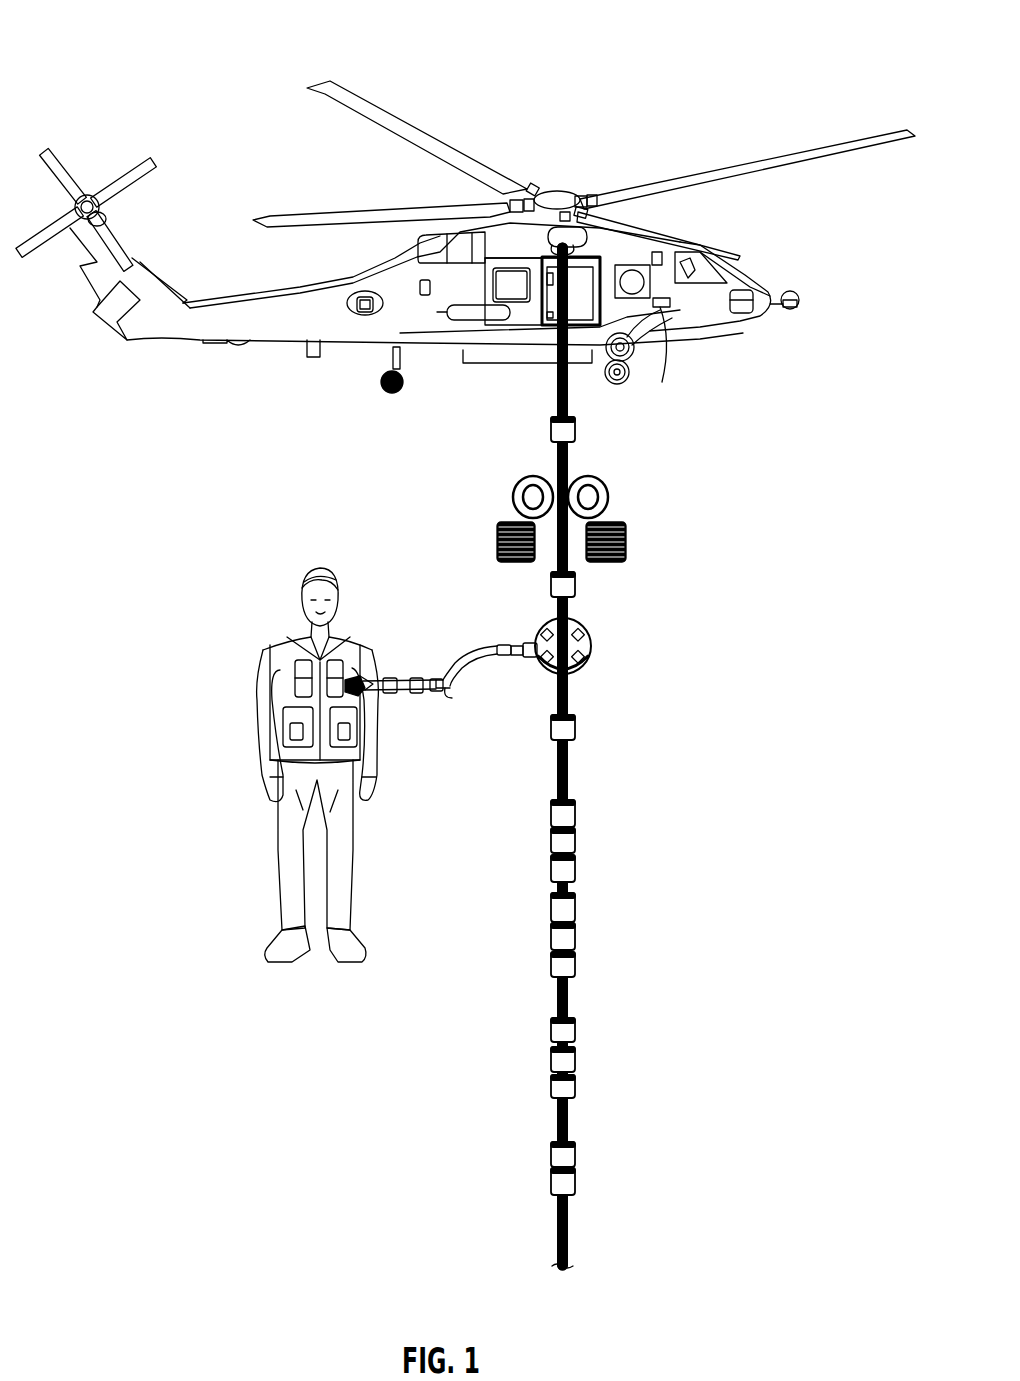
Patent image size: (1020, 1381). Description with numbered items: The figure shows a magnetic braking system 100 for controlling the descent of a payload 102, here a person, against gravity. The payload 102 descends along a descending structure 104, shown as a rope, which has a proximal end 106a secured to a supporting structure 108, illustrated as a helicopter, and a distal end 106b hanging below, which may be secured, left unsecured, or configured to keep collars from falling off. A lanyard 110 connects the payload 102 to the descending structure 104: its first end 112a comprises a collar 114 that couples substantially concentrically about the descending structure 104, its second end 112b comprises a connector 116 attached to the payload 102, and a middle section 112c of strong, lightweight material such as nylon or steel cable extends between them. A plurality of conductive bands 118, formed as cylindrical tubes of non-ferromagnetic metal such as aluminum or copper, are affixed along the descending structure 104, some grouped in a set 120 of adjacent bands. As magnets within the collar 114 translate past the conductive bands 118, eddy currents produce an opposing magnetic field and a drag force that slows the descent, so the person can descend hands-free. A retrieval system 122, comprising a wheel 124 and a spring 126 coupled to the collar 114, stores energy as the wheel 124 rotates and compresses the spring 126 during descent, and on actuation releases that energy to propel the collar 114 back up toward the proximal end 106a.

The magnetic braking system 100 is at (160, 35).
The payload 102 is at (290, 873).
The descending structure 104 is at (555, 772).
The proximal end 106a is at (592, 303).
The distal end 106b is at (540, 1219).
The supporting structure 108 is at (530, 243).
The lanyard 110 is at (466, 636).
The first end 112a is at (545, 683).
The second end 112b is at (407, 699).
The middle section 112c is at (465, 672).
The collar 114 is at (590, 648).
The connector 116 is at (366, 681).
The conductive bands 118 is at (577, 906).
The set 120 is at (548, 895).
The retrieval system 122 is at (678, 529).
The wheel 124 is at (514, 496).
The spring 126 is at (497, 545).